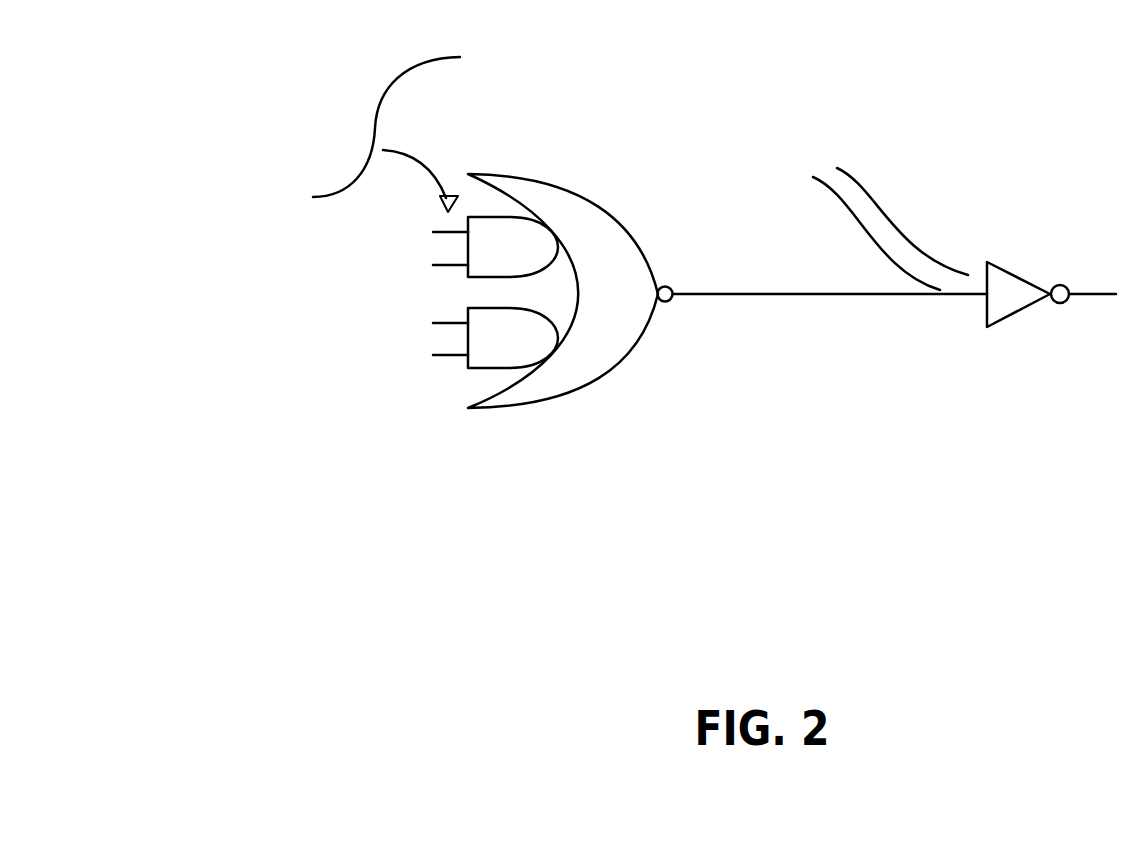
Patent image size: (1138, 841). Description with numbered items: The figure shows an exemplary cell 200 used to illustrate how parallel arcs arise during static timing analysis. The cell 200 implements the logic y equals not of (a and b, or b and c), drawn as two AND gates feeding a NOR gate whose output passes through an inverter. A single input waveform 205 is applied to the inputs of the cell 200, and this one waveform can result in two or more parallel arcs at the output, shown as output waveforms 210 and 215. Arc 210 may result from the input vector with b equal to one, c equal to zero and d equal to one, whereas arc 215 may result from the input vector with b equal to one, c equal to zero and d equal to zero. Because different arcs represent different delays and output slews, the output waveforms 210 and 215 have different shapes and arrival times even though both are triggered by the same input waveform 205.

The cell 200 is at (732, 789).
The input waveform 205 is at (328, 260).
The parallel arc 210 is at (902, 183).
The parallel arc 215 is at (869, 277).